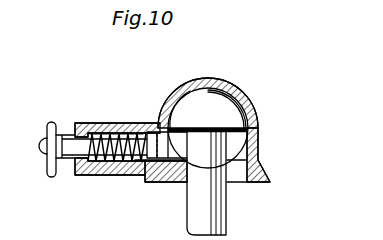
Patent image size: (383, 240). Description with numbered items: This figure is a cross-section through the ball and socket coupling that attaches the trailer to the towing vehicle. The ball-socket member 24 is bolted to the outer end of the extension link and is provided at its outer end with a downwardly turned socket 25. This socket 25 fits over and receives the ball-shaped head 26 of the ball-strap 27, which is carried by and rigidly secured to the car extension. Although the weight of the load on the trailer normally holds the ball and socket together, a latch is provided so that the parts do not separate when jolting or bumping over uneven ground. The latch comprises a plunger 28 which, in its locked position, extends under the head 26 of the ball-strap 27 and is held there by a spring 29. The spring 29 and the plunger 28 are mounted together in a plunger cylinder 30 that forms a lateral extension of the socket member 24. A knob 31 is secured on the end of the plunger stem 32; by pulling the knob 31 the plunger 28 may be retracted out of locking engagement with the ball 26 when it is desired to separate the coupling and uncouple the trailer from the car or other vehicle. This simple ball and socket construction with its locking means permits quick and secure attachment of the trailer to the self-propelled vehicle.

The ball-socket member 24 is at (164, 106).
The downwardly turned socket 25 is at (252, 140).
The ball-shaped head 26 is at (206, 100).
The ball-strap 27 is at (228, 210).
The plunger 28 is at (164, 178).
The spring 29 is at (108, 162).
The plunger cylinder 30 is at (121, 123).
The knob 31 is at (53, 172).
The plunger stem 32 is at (130, 162).